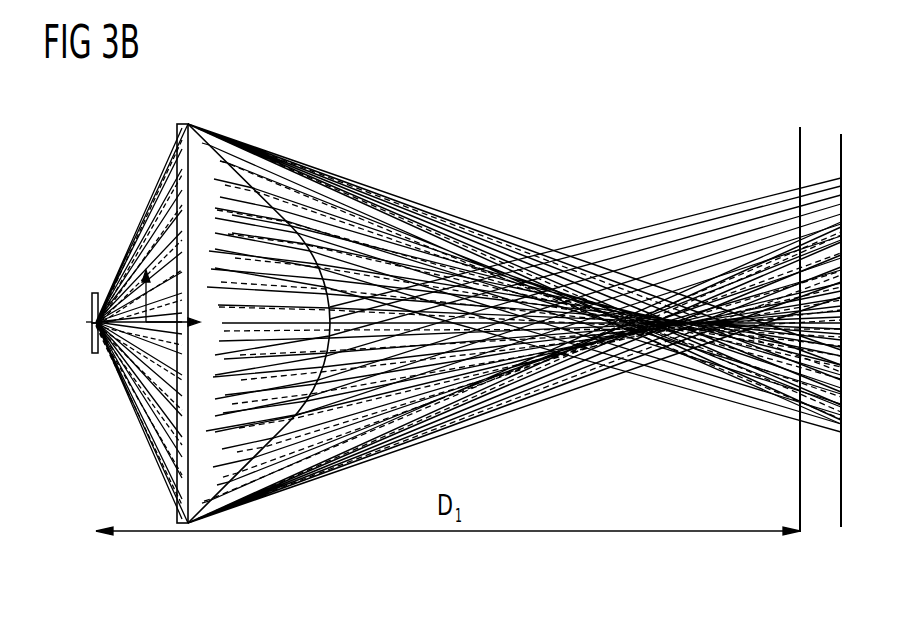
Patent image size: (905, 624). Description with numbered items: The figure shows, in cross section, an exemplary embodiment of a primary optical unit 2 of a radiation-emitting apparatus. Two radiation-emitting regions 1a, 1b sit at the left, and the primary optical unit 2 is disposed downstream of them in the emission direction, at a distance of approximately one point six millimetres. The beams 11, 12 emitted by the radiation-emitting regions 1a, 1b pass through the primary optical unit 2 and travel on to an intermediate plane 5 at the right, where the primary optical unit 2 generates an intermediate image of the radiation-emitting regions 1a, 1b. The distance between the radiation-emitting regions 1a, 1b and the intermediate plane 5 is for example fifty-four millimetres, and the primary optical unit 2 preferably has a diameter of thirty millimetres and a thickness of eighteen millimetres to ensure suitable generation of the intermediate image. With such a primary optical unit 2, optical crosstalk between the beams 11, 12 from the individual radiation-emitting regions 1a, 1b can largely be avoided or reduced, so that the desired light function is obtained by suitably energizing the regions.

The radiation-emitting region 1a is at (92, 300).
The radiation-emitting region 1b is at (92, 340).
The primary optical unit 2 is at (192, 135).
The intermediate plane 5 is at (825, 460).
The beam 11 is at (150, 237).
The beam 12 is at (128, 370).